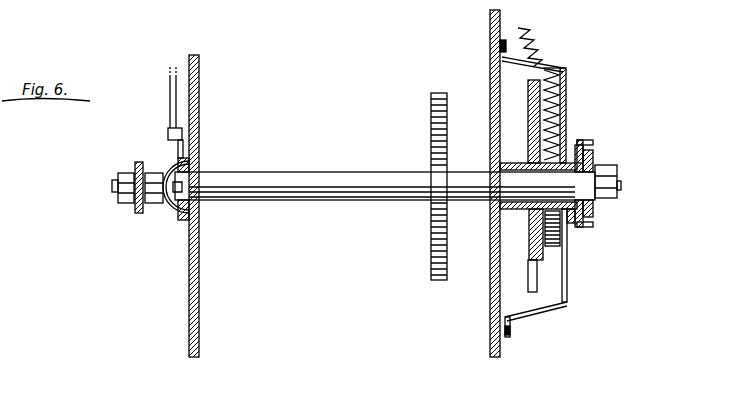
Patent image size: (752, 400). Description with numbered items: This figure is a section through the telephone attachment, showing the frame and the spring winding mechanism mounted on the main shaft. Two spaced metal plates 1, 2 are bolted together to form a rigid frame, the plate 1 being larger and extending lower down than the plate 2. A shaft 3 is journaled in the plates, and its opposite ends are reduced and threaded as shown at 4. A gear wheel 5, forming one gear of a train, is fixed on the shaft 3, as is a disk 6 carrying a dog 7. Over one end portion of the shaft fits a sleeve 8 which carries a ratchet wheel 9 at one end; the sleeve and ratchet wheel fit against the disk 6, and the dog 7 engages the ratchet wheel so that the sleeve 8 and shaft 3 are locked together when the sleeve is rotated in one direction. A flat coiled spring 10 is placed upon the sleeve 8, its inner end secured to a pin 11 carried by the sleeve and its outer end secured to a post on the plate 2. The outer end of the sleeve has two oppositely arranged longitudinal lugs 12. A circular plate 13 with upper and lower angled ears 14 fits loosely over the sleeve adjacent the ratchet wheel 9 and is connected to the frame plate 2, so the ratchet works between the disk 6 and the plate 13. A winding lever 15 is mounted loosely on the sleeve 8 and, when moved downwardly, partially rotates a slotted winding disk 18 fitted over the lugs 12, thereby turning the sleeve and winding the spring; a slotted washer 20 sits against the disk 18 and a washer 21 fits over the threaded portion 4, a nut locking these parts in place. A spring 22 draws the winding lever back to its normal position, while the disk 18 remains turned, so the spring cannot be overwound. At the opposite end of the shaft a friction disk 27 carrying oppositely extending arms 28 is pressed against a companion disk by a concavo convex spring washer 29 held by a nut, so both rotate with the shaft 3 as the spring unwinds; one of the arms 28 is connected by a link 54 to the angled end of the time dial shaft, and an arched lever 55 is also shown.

The metal plate 1 is at (202, 307).
The metal plate 2 is at (490, 310).
The shaft 3 is at (337, 192).
The reduced threaded portion 4 is at (112, 187).
The gear wheel 5 is at (431, 137).
The disk 6 is at (528, 135).
The dog 7 is at (546, 68).
The sleeve 8 is at (530, 209).
The ratchet wheel 9 is at (567, 123).
The spring 10 is at (567, 250).
The pin 11 is at (590, 152).
The lugs 12 is at (595, 162).
The circular plate 13 is at (566, 95).
The angled ears 14 is at (505, 55).
The winding lever 15 is at (572, 227).
The disk 18 is at (580, 227).
The washer 20 is at (587, 145).
The washer 21 is at (595, 205).
The spring 22 is at (562, 68).
The friction disk 27 is at (200, 165).
The arms 28 is at (168, 145).
The concavo convex spring washer 29 is at (168, 207).
The link 54 is at (176, 108).
The arched lever 55 is at (135, 208).